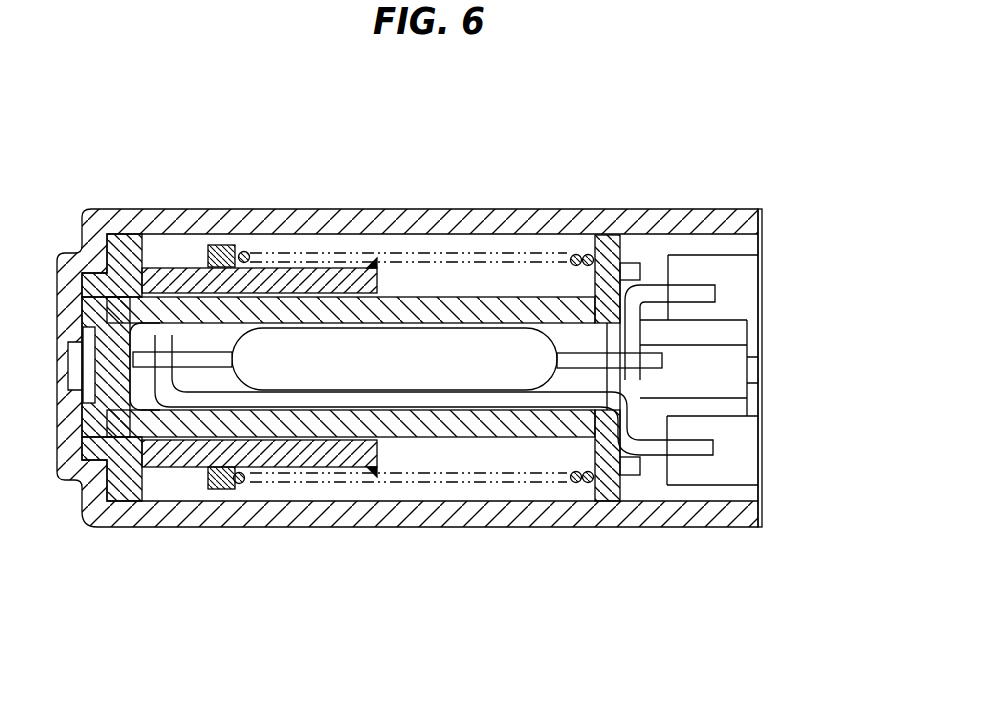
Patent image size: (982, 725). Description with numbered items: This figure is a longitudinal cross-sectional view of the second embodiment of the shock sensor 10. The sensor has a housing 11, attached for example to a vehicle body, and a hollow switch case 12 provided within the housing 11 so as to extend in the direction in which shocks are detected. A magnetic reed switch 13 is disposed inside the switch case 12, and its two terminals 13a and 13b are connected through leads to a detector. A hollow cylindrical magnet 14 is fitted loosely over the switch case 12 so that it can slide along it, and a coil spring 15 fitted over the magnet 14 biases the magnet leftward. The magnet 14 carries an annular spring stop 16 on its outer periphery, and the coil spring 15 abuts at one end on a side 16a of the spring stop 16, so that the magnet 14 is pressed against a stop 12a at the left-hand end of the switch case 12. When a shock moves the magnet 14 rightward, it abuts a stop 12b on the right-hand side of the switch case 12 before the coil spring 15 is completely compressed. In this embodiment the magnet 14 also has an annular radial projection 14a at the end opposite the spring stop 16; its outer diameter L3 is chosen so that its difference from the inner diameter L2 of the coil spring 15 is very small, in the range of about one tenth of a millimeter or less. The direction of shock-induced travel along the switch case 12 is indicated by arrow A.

The shock sensor 10 is at (690, 170).
The housing 11 is at (528, 213).
The switch case 12 is at (440, 420).
The stop 12a is at (120, 502).
The stop 12b is at (612, 502).
The magnetic reed switch 13 is at (305, 378).
The terminal 13a is at (715, 296).
The terminal 13b is at (713, 448).
The magnet 14 is at (322, 268).
The annular radial projection 14a is at (372, 258).
The coil spring 15 is at (422, 253).
The annular spring stop 16 is at (228, 245).
The side of the spring stop 16a is at (237, 490).
The outer diameter of the radial projection L3 is at (388, 258).
The inner diameter of the coil spring L2 is at (497, 263).
The direction A is at (388, 280).